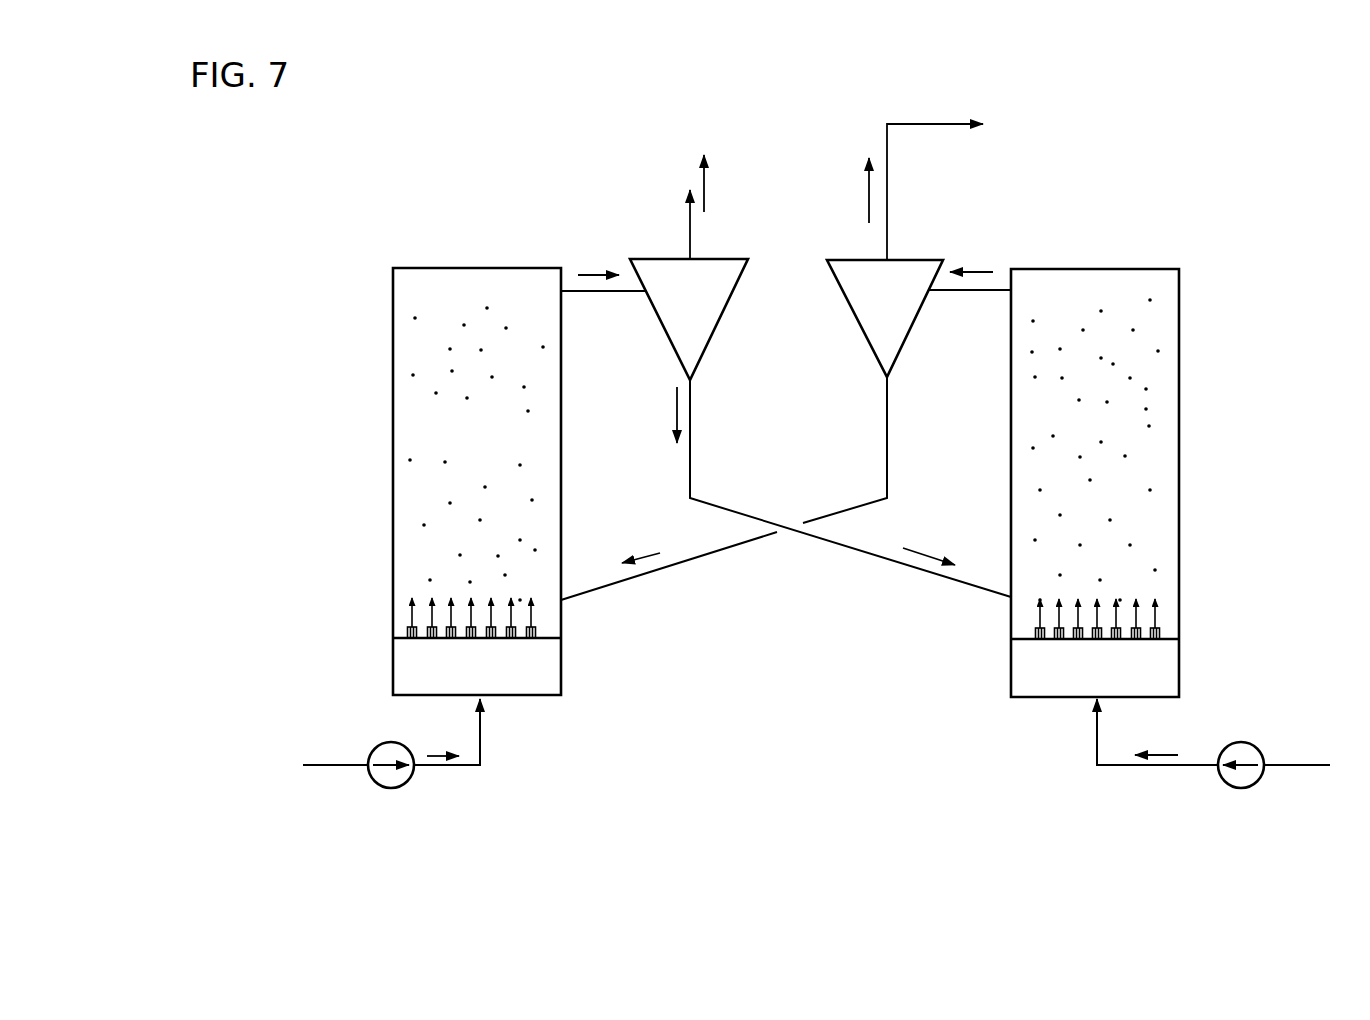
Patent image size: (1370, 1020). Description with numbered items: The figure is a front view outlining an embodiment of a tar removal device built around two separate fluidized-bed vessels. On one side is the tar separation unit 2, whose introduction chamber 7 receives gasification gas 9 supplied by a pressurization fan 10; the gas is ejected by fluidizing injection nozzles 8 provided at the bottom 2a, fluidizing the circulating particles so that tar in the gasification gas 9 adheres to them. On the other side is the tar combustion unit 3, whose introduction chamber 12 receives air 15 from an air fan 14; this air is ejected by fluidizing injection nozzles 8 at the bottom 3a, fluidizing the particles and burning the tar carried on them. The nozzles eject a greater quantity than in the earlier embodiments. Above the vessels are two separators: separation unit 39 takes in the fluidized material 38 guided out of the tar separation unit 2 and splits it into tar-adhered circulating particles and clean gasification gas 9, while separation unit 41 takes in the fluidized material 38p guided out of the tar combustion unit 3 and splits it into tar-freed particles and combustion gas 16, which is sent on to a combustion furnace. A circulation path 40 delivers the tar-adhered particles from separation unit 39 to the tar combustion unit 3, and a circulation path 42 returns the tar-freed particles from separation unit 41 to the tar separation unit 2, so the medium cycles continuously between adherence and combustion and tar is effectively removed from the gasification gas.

The tar separation unit 2 is at (386, 313).
The bottom of the tar separation unit 2a is at (418, 645).
The tar combustion unit 3 is at (1190, 337).
The bottom of the tar combustion unit 3a is at (1117, 641).
The introduction chamber 7 is at (527, 680).
The fluidizing injection nozzles 8 is at (540, 621).
The gasification gas 9 is at (706, 200).
The pressurization fan 10 is at (390, 789).
The introduction chamber 12 is at (1032, 675).
The air fan 14 is at (1239, 789).
The air 15 is at (1160, 752).
The combustion gas 16 is at (866, 214).
The fluidized material 38 is at (595, 270).
The fluidized material 38p is at (983, 272).
The separation unit 39 is at (719, 333).
The circulation path 40 is at (893, 563).
The separation unit 41 is at (871, 352).
The circulation path 42 is at (728, 550).